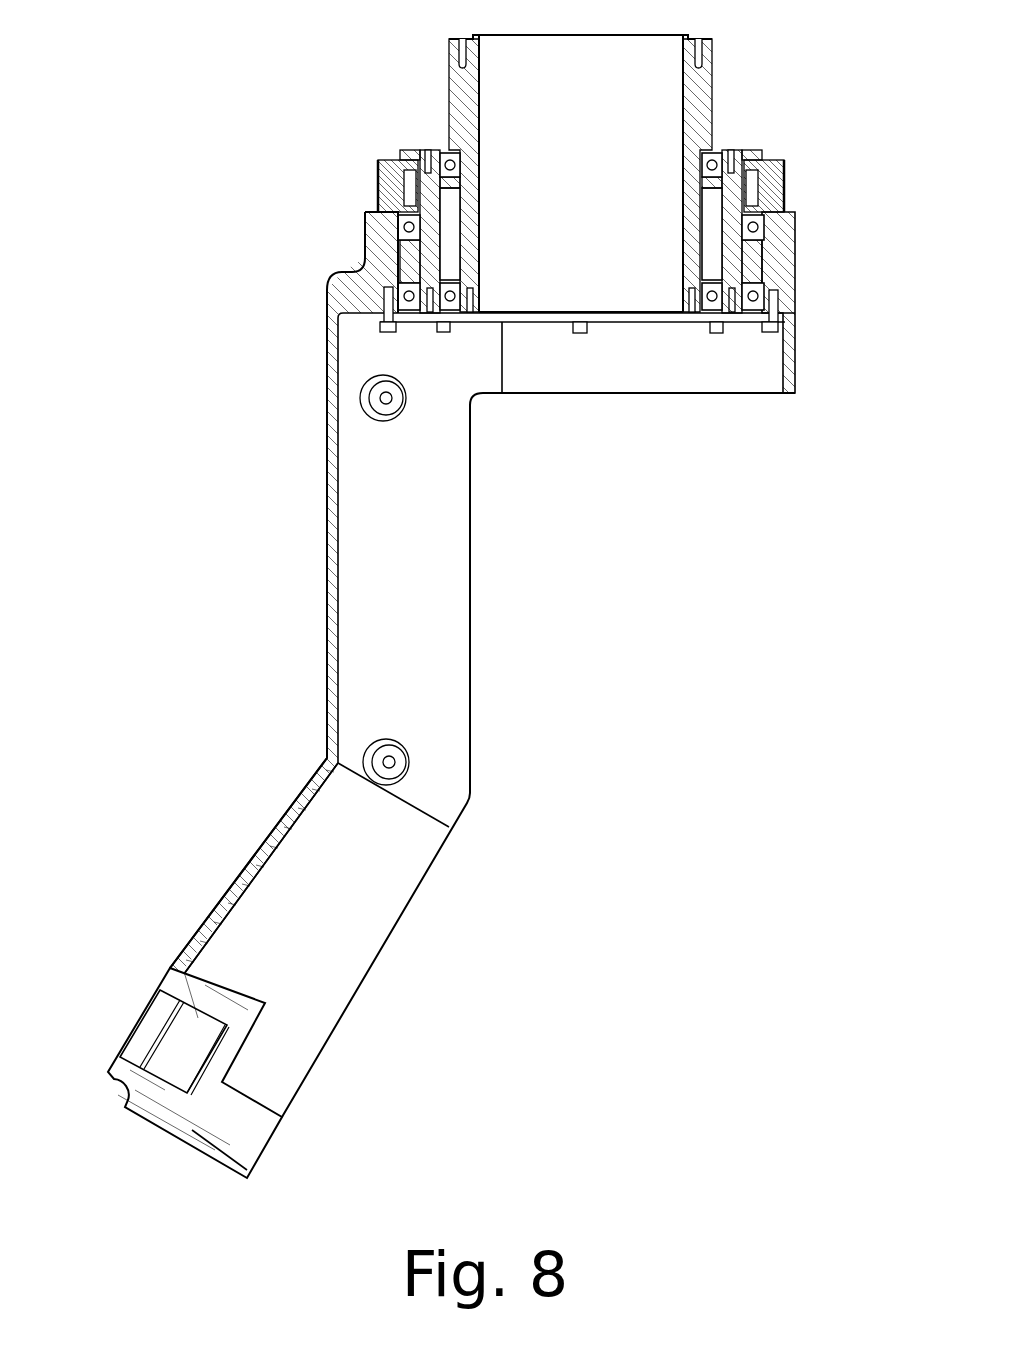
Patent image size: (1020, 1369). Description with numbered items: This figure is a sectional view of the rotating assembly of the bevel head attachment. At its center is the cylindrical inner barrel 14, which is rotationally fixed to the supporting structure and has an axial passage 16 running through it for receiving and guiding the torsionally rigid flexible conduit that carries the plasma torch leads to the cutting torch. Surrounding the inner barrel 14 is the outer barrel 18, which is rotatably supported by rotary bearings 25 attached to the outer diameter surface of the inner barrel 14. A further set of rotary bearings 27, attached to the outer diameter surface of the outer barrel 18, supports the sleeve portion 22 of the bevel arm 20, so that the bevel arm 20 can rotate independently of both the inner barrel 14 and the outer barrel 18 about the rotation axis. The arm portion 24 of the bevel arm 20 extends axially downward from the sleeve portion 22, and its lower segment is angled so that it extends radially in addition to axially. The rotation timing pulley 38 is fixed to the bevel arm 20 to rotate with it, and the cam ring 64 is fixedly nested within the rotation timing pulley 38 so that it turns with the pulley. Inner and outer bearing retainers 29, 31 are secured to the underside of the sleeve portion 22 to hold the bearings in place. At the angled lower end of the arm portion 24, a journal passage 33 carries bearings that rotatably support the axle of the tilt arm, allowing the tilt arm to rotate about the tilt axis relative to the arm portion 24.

The inner barrel 14 is at (712, 98).
The axial passage 16 is at (481, 66).
The outer barrel 18 is at (738, 155).
The bevel arm 20 is at (316, 646).
The sleeve portion 22 is at (378, 238).
The arm portion 24 is at (297, 822).
The rotary bearings 25 is at (708, 164).
The rotary bearings 27 is at (757, 236).
The inner bearing retainer 29 is at (455, 321).
The outer bearing retainer 31 is at (768, 322).
The journal passage 33 is at (166, 999).
The rotation timing pulley 38 is at (779, 185).
The cam ring 64 is at (400, 189).